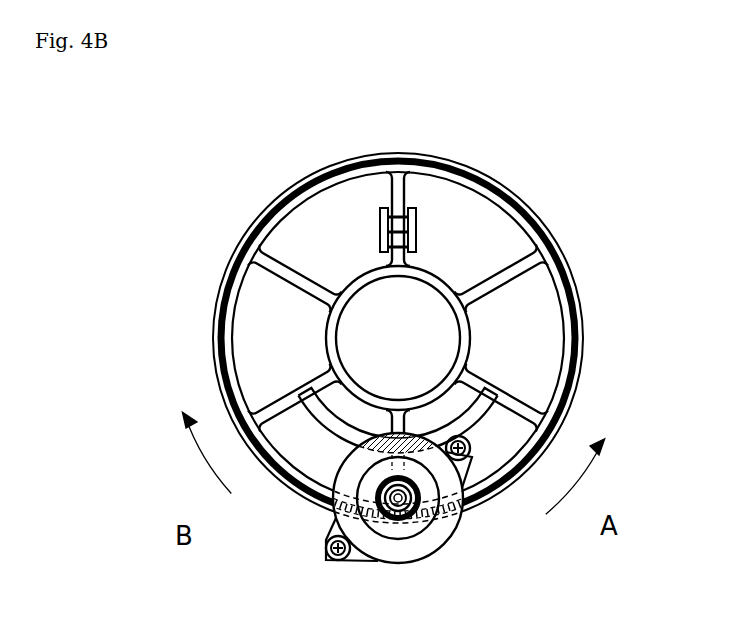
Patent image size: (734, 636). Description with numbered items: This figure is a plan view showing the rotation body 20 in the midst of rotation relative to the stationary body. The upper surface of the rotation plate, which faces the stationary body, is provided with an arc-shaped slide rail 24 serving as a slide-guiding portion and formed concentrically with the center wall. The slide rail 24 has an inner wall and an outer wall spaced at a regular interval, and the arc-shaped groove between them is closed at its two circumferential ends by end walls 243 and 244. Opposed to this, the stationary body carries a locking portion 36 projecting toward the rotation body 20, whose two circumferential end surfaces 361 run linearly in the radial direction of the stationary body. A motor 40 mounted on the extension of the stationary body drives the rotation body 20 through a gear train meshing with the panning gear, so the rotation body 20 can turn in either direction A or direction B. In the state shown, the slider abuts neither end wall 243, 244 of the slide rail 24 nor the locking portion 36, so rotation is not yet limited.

The rotation body 20 is at (270, 198).
The slide rail 24 is at (401, 395).
The end wall 243 is at (300, 391).
The end wall 244 is at (500, 389).
The locking portion 36 is at (472, 150).
The circumferential end surfaces 361 is at (421, 226).
The motor 40 is at (398, 392).